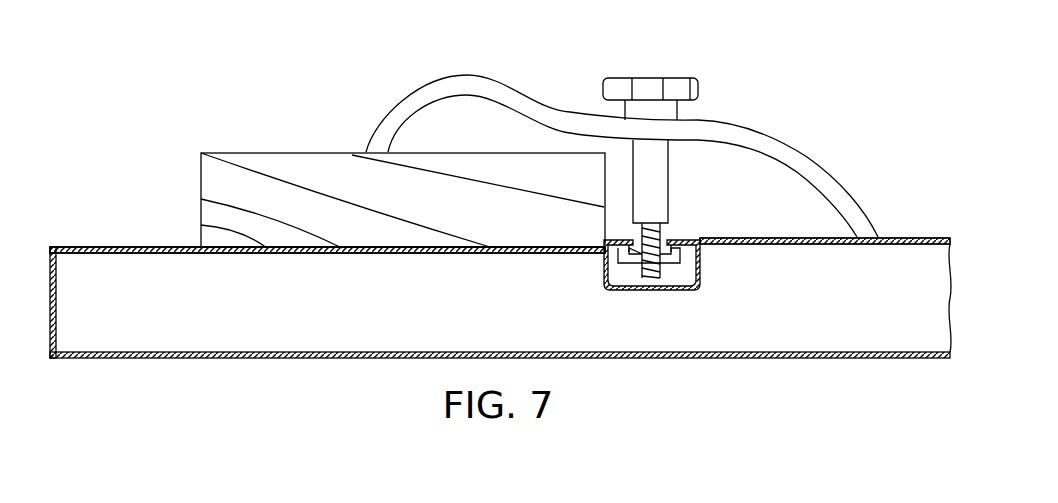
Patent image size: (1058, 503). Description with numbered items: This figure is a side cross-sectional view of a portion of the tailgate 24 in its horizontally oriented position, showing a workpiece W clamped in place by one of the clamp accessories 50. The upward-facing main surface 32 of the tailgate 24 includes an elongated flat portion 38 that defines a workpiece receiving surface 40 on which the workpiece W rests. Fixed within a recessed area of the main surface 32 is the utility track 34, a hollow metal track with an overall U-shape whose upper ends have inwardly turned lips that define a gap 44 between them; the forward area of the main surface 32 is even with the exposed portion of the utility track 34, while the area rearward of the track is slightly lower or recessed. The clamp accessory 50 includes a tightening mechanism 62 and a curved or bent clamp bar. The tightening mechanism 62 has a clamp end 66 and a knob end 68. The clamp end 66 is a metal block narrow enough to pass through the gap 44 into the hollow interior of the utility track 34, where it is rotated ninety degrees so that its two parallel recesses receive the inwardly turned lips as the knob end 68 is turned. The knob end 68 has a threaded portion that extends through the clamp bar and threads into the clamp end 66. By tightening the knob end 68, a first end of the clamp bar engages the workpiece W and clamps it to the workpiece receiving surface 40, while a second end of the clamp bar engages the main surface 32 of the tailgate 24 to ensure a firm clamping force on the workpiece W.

The tailgate 24 is at (932, 238).
The main surface 32 is at (908, 238).
The utility track 34 is at (693, 266).
The elongated flat portion 38 is at (143, 247).
The workpiece receiving surface 40 is at (83, 247).
The gap 44 is at (662, 246).
The clamp accessory 50 is at (483, 74).
The tightening mechanism 62 is at (680, 108).
The clamp end 66 is at (625, 257).
The knob end 68 is at (618, 90).
The workpiece W is at (272, 198).